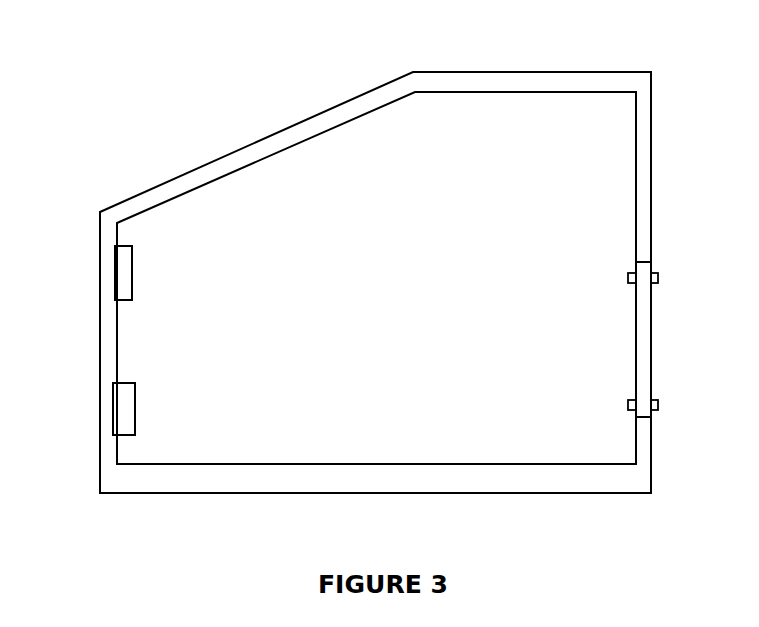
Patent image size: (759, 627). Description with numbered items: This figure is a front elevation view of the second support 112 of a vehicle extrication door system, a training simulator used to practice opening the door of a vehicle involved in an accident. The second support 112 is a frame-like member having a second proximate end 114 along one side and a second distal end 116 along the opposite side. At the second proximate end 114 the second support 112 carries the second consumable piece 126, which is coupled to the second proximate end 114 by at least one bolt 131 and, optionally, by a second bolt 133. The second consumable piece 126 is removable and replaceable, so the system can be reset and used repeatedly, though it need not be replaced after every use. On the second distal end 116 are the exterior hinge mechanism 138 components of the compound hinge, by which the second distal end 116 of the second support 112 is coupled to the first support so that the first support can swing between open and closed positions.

The second support 112 is at (460, 80).
The second proximate end 114 is at (647, 168).
The second distal end 116 is at (110, 355).
The second consumable piece 126 is at (642, 328).
The bolt 131 is at (658, 275).
The second bolt 133 is at (667, 405).
The exterior hinge mechanism 138 is at (125, 278).